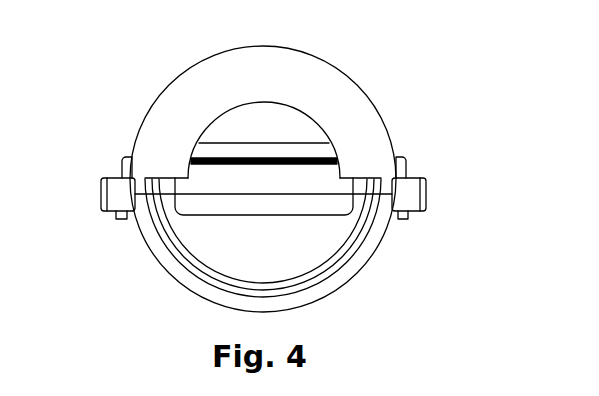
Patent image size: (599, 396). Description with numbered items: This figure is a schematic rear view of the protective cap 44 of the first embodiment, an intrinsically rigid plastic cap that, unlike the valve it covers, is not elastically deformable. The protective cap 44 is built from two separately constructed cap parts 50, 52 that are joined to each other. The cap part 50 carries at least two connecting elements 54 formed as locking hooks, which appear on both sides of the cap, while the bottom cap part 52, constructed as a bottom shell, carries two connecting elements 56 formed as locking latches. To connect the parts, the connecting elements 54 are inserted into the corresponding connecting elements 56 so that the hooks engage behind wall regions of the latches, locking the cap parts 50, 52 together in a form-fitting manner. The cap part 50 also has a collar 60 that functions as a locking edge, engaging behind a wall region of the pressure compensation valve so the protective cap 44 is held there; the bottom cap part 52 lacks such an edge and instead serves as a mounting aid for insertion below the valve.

The protective cap 44 is at (362, 117).
The cap part 50 is at (163, 88).
The cap part 52 is at (337, 284).
The connecting element 54 is at (118, 219).
The connecting element 56 is at (102, 183).
The collar 60 is at (333, 93).